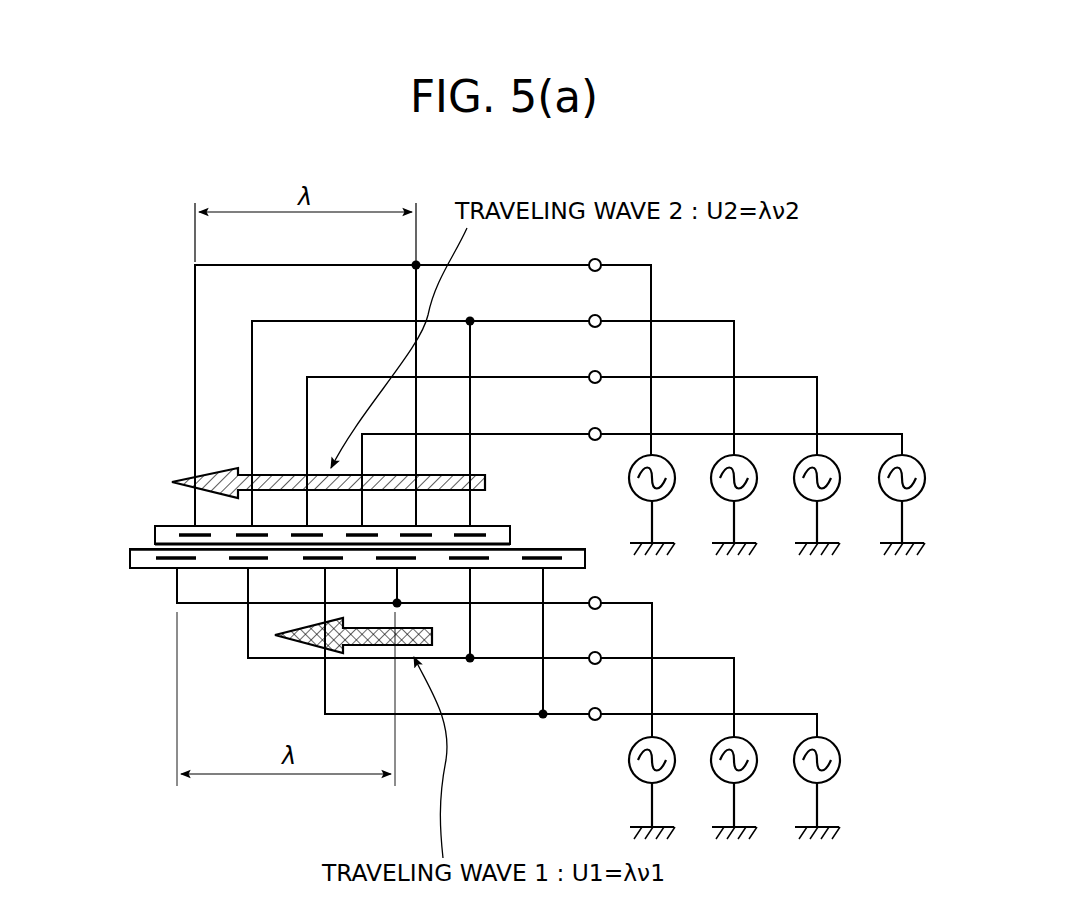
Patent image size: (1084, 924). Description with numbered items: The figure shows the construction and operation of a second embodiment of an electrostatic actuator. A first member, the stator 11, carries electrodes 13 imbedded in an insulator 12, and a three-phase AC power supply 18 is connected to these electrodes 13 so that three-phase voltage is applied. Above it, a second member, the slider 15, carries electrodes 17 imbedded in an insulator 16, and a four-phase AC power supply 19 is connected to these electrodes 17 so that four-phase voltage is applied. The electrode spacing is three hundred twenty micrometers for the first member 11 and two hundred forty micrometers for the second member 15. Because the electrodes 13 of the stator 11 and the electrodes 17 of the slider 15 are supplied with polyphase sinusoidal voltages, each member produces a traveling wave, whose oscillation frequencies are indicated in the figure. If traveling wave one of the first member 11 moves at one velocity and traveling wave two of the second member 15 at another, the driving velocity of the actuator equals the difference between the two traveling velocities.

The first member (stator) 11 is at (127, 572).
The insulator 12 is at (130, 553).
The electrodes 13 is at (164, 561).
The second member (slider) 15 is at (151, 523).
The insulator 16 is at (156, 538).
The electrodes 17 is at (186, 531).
The three-phase AC power supply 18 is at (768, 671).
The four-phase AC power supply 19 is at (773, 316).